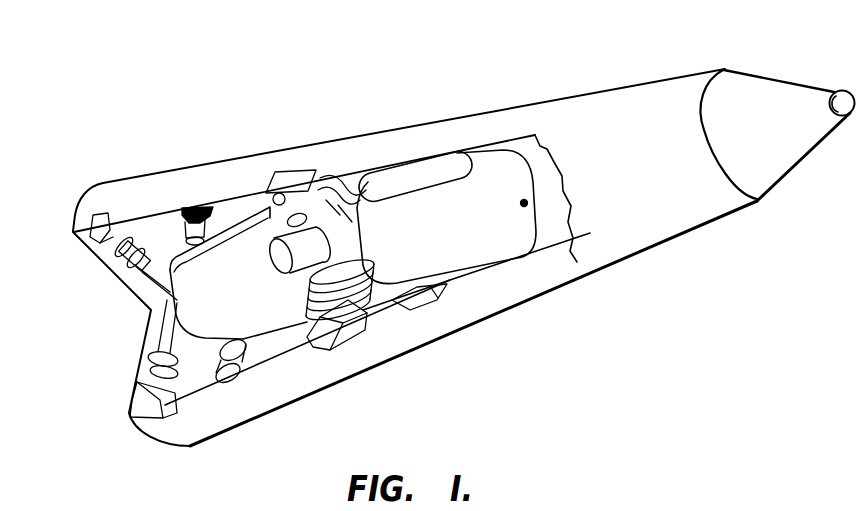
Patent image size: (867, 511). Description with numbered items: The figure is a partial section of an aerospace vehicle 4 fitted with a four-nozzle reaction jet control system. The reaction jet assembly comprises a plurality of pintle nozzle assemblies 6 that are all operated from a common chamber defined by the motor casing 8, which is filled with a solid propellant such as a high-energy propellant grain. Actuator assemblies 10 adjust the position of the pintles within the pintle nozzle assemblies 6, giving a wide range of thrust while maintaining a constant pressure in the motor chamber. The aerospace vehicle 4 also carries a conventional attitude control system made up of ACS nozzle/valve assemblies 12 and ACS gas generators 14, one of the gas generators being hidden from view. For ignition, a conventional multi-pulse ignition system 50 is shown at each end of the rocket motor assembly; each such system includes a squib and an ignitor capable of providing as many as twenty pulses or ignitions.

The aerospace vehicle 4 is at (623, 42).
The pintle nozzle assemblies 6 is at (289, 170).
The motor casing 8 is at (222, 313).
The actuator assemblies 10 is at (279, 256).
The ACS nozzle/valve assemblies 12 is at (201, 207).
The ACS gas generators 14 is at (426, 176).
The multi-pulse ignition system 50 is at (524, 203).